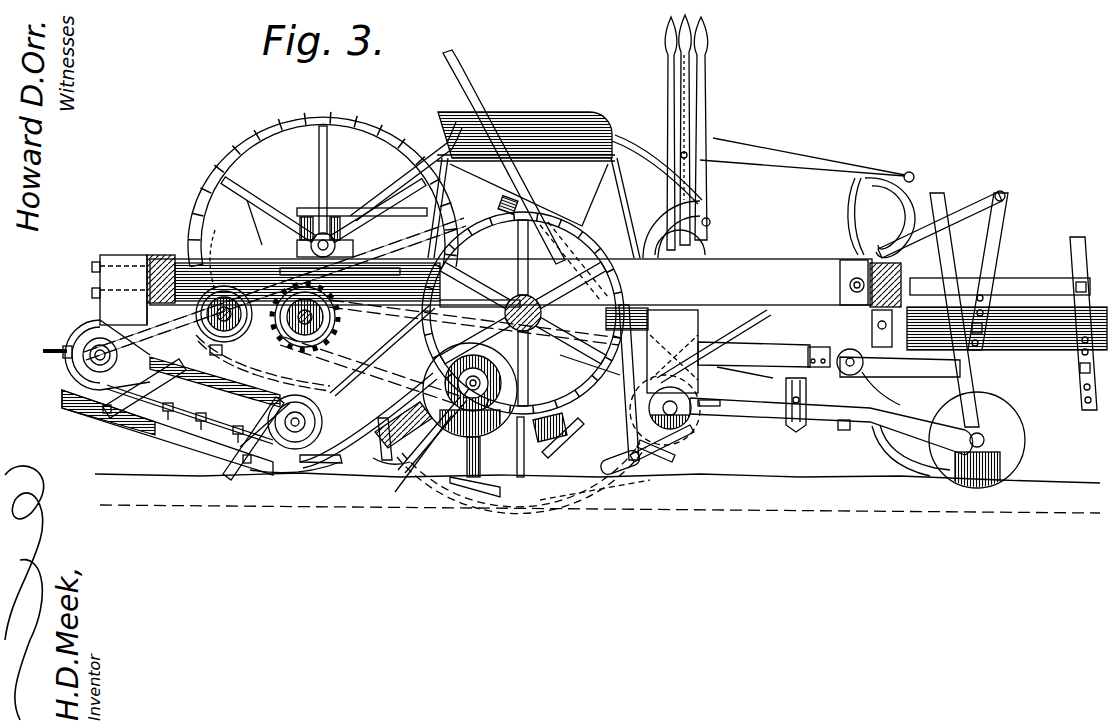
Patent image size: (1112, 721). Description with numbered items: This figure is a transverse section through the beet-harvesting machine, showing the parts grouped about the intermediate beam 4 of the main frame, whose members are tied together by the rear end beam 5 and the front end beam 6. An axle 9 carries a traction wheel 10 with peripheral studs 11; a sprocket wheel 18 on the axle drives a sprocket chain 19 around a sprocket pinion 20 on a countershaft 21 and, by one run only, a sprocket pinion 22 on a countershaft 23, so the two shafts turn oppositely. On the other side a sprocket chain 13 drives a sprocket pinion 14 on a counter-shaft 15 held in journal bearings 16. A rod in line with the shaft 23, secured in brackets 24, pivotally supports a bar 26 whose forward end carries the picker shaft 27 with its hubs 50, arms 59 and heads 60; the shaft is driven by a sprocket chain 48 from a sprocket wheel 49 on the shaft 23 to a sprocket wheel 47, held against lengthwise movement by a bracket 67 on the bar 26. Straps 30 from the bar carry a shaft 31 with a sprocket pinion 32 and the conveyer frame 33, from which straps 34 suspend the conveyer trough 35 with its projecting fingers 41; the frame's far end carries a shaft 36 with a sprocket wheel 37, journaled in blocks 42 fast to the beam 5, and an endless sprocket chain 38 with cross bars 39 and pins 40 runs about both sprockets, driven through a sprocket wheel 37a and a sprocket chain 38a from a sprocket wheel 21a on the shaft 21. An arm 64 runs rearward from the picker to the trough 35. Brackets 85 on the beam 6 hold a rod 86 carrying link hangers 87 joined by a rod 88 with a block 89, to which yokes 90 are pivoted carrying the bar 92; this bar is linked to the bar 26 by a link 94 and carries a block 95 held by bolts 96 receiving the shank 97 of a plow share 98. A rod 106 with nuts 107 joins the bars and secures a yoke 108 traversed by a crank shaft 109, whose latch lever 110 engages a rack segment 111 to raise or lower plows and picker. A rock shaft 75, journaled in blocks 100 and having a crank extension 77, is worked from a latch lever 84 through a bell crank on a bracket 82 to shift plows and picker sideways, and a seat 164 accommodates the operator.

The intermediate beam 4 is at (511, 282).
The end beam 5 is at (160, 256).
The end beam 6 is at (894, 287).
The axle 9 is at (516, 298).
The traction wheel 10 is at (655, 470).
The peripheral studs 11 is at (420, 142).
The sprocket chain 13 is at (400, 202).
The sprocket pinion 14 is at (315, 232).
The counter-shaft 15 is at (340, 208).
The journal bearings 16 is at (312, 240).
The sprocket wheel 18 is at (622, 380).
The sprocket chain 19 is at (372, 262).
The sprocket pinion 20 is at (224, 284).
The countershaft 21 is at (300, 286).
The sprocket wheel 21a is at (275, 289).
The sprocket pinion 22 is at (340, 274).
The countershaft 23 is at (283, 240).
The brackets 24 is at (224, 249).
The bar 26 is at (408, 353).
The picker shaft 27 is at (421, 435).
The straps 30 is at (391, 429).
The shaft 31 is at (290, 474).
The sprocket pinion 32 is at (304, 422).
The conveyer frame 33 is at (190, 414).
The straps 34 is at (122, 420).
The conveyer trough 35 is at (180, 440).
The shaft 36 is at (72, 372).
The sprocket wheel 37 is at (78, 345).
The sprocket wheel 37a is at (88, 332).
The sprocket chain 38 is at (200, 432).
The sprocket chain 38a is at (146, 300).
The cross bars 39 is at (80, 404).
The pins 40 is at (223, 356).
The fingers 41 is at (330, 465).
The blocks 42 is at (110, 280).
The sprocket wheel 47 is at (472, 467).
The sprocket chain 48 is at (527, 438).
The sprocket wheel 49 is at (264, 425).
The hubs 50 is at (550, 447).
The arms 59 is at (422, 461).
The heads 60 is at (510, 512).
The arm 64 is at (368, 422).
The bracket 67 is at (490, 391).
The rock shaft 75 is at (738, 410).
The crank extension 77 is at (833, 421).
The bracket 82 is at (729, 346).
The latch lever 84 is at (666, 96).
The brackets 85 is at (852, 280).
The rod 86 is at (852, 289).
The hangers 87 is at (872, 318).
The rod 88 is at (862, 368).
The block 89 is at (872, 333).
The yoke 90 is at (865, 386).
The bar 92 is at (894, 359).
The link 94 is at (477, 294).
The block 95 is at (590, 370).
The bolts 96 is at (665, 390).
The shank 97 is at (668, 420).
The plow share 98 is at (625, 485).
The blocks 100 is at (672, 351).
The rod 106 is at (610, 322).
The nuts 107 is at (515, 372).
The yoke 108 is at (536, 302).
The crank shaft 109 is at (520, 212).
The latch lever 110 is at (478, 100).
The rack segment 111 is at (585, 245).
The seat 164 is at (565, 113).